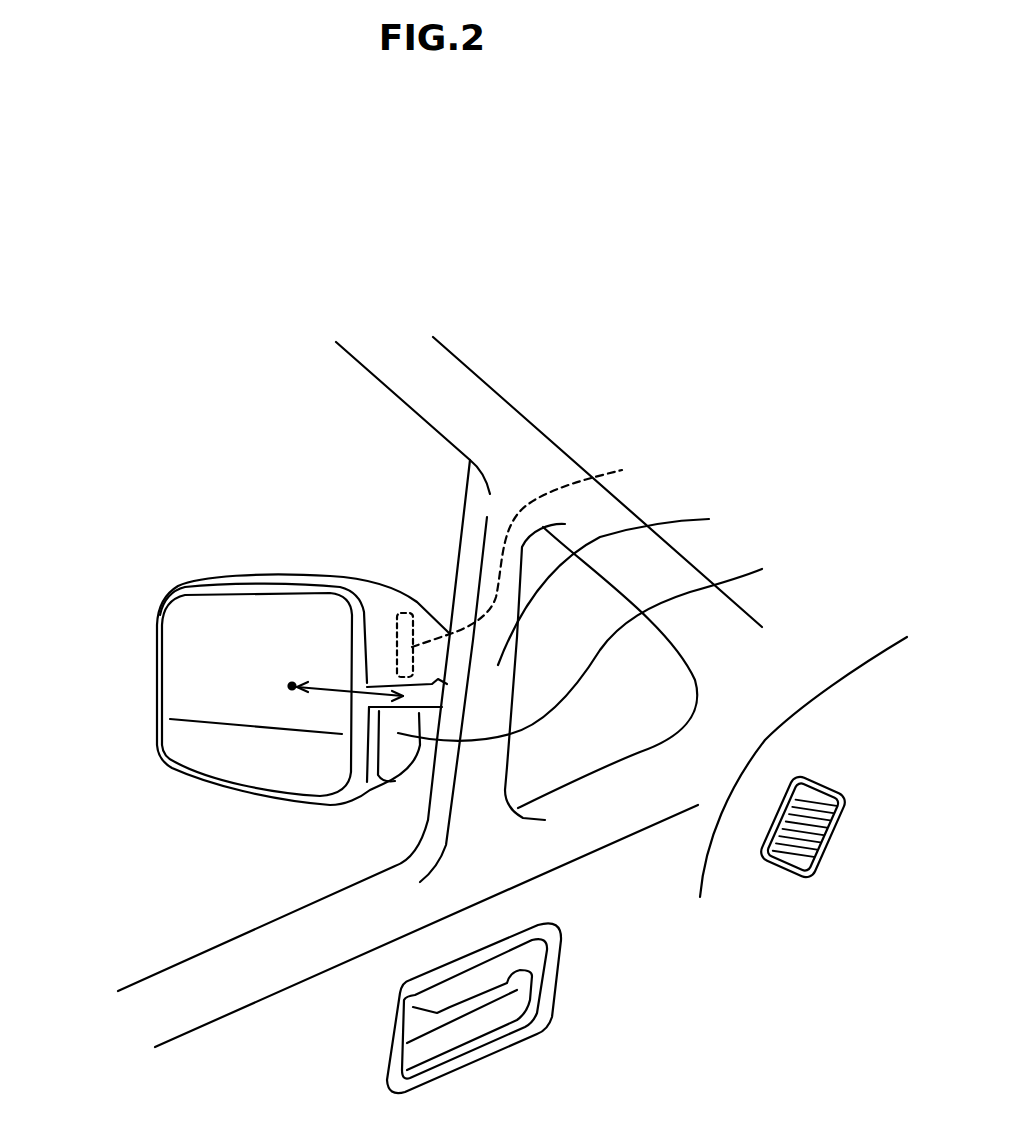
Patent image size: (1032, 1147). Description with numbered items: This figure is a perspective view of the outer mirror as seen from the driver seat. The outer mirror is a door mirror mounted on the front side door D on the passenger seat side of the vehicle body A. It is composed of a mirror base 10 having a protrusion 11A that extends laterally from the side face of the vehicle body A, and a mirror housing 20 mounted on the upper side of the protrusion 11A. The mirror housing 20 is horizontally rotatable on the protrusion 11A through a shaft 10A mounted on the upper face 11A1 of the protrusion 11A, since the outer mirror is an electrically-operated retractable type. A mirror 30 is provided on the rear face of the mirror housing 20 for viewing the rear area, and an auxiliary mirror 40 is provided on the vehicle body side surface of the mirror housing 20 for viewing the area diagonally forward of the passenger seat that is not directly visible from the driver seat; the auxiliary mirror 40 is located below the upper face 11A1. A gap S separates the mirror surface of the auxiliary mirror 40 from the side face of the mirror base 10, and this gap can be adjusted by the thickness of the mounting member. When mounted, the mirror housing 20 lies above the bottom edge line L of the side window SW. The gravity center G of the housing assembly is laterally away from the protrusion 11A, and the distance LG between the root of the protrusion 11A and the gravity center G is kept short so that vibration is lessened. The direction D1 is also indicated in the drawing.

The mirror base 10 is at (490, 768).
The shaft 10A is at (546, 549).
The protrusion 11A is at (632, 662).
The upper face 11A1 is at (400, 592).
The mirror housing 20 is at (227, 575).
The mirror 30 is at (180, 622).
The auxiliary mirror 40 is at (603, 650).
The vehicle body A is at (673, 402).
The front side door D is at (237, 968).
The pillar direction line D1 is at (442, 359).
The gravity center G is at (291, 685).
The bottom edge line L is at (143, 975).
The distance LG is at (350, 677).
The gap S is at (413, 776).
The side window SW is at (347, 407).